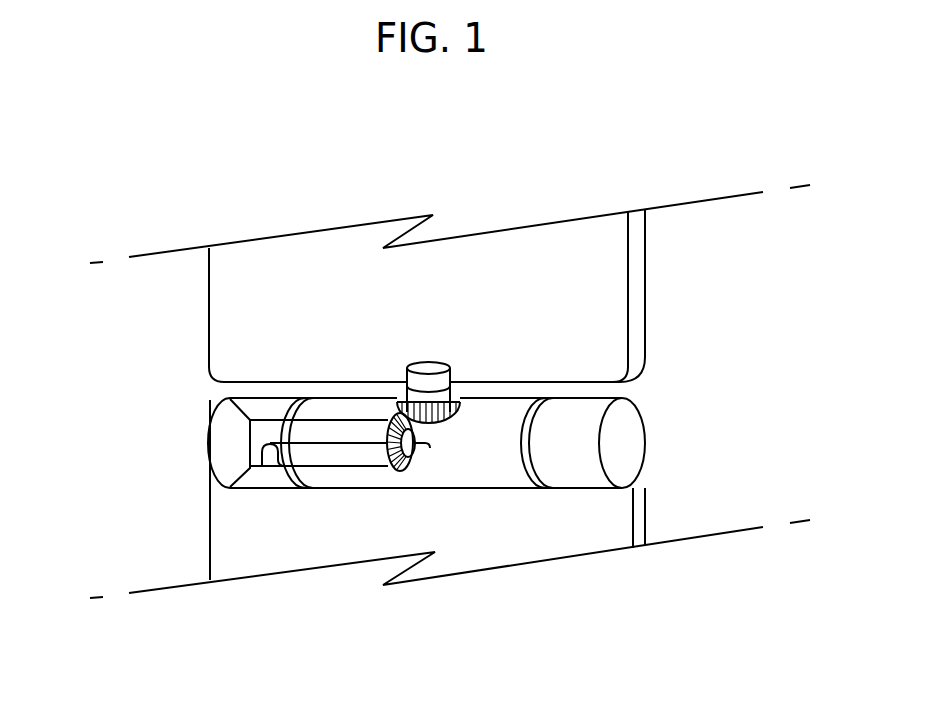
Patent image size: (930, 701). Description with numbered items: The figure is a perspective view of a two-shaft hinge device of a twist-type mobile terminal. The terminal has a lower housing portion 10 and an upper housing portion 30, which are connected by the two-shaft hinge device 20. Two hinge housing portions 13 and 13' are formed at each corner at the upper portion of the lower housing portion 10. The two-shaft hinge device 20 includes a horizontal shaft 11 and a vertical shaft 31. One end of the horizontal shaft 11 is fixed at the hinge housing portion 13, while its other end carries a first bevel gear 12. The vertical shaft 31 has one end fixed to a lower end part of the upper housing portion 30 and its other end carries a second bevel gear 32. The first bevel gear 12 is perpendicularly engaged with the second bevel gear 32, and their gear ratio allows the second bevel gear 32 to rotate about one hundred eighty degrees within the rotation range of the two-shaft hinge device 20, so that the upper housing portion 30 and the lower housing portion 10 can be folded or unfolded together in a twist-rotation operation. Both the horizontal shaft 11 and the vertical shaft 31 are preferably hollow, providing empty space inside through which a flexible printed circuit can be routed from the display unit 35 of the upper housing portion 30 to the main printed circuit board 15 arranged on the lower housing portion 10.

The lower housing portion 10 is at (583, 518).
The horizontal shaft 11 is at (330, 462).
The first bevel gear 12 is at (403, 470).
The hinge housing portion 13 is at (145, 443).
The hinge housing portion 13' is at (689, 443).
The main printed circuit board 15 is at (267, 447).
The two-shaft hinge device 20 is at (485, 470).
The upper housing portion 30 is at (583, 292).
The vertical shaft 31 is at (407, 398).
The second bevel gear 32 is at (458, 422).
The display unit 35 is at (428, 412).